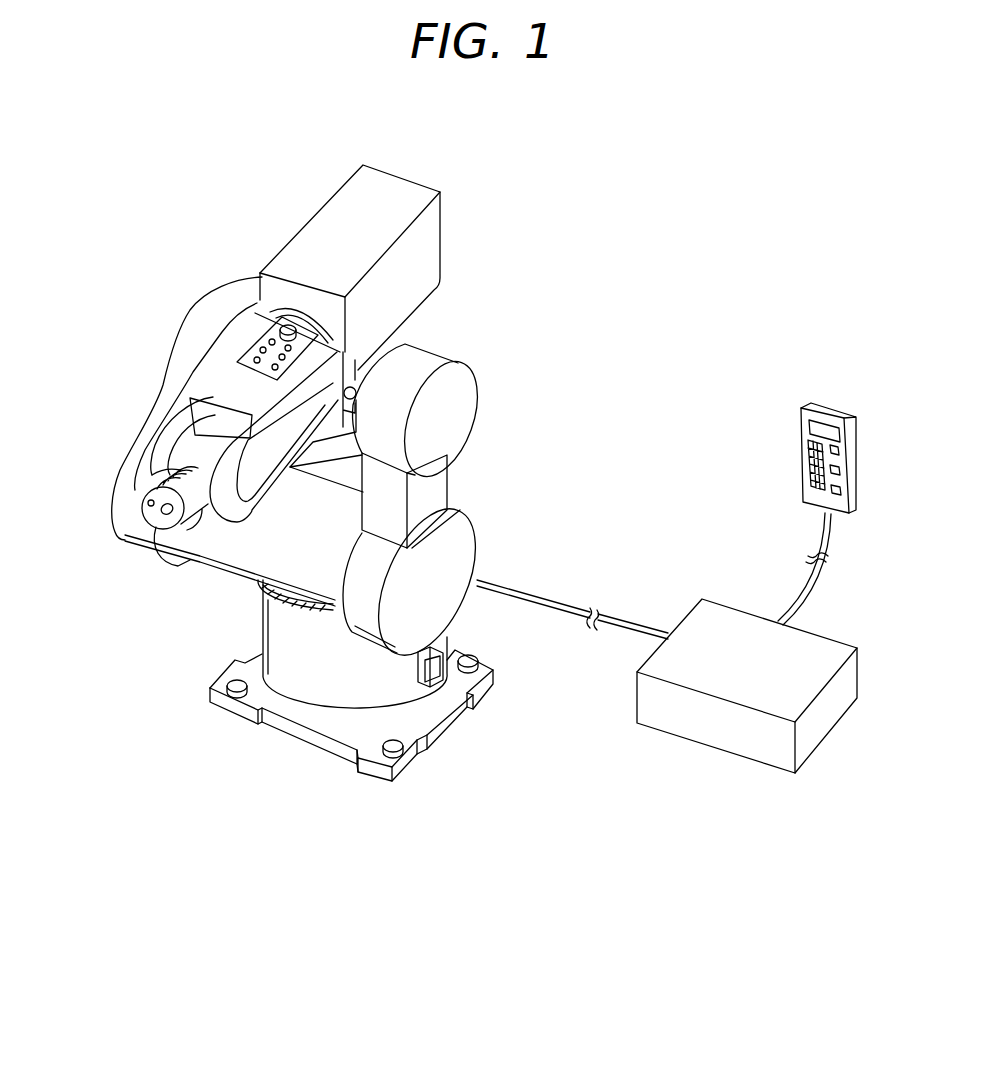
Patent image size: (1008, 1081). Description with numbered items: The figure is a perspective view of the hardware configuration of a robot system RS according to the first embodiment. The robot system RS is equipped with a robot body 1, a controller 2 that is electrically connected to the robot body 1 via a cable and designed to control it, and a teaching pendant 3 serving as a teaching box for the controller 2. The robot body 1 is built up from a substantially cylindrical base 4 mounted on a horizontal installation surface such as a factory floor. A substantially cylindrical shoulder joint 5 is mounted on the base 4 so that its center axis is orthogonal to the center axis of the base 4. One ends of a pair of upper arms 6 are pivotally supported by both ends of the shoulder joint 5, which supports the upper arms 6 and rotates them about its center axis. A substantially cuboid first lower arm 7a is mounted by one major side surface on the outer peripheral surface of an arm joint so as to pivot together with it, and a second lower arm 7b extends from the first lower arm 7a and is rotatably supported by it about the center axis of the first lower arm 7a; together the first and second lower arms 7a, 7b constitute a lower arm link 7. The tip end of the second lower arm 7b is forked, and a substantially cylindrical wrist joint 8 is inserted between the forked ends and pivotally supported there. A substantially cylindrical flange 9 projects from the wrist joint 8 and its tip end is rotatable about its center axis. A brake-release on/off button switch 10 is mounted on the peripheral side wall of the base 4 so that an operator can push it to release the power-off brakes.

The robot system RS is at (632, 848).
The robot body 1 is at (502, 210).
The controller 2 is at (707, 748).
The teaching pendant 3 is at (833, 403).
The base 4 is at (262, 634).
The shoulder joint 5 is at (207, 561).
The upper arms 6 is at (447, 486).
The lower arm link 7 is at (243, 150).
The first lower arm 7a is at (310, 226).
The second lower arm 7b is at (188, 360).
The wrist joint 8 is at (187, 443).
The flange 9 is at (153, 518).
The brake-release on/off button switch 10 is at (433, 680).